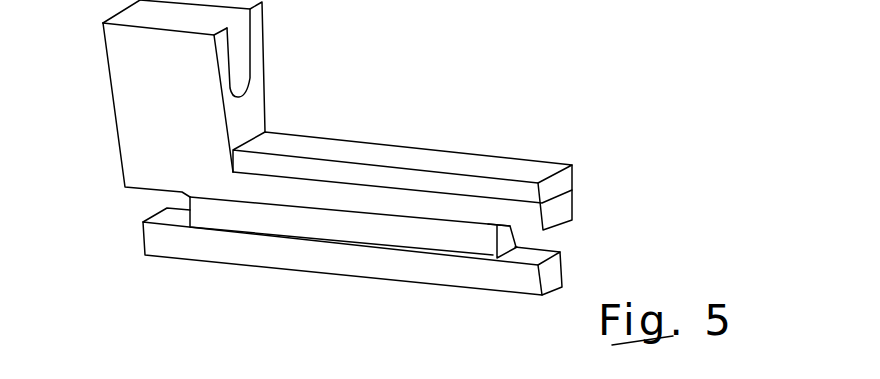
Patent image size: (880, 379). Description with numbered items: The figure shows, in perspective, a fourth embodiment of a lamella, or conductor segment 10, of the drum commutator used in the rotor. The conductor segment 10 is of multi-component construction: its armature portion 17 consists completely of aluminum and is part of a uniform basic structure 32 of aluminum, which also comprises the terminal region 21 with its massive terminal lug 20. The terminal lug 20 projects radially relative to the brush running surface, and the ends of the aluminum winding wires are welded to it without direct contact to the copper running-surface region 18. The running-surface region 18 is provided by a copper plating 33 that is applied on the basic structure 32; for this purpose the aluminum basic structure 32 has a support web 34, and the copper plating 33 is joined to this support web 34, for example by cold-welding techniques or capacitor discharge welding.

The conductor segment 10 is at (650, 188).
The armature portion 17 is at (337, 295).
The running-surface region 18 is at (428, 142).
The terminal lug 20 is at (248, 113).
The terminal region 21 is at (290, 55).
The basic structure 32 is at (268, 203).
The copper plating 33 is at (565, 175).
The support web 34 is at (473, 212).